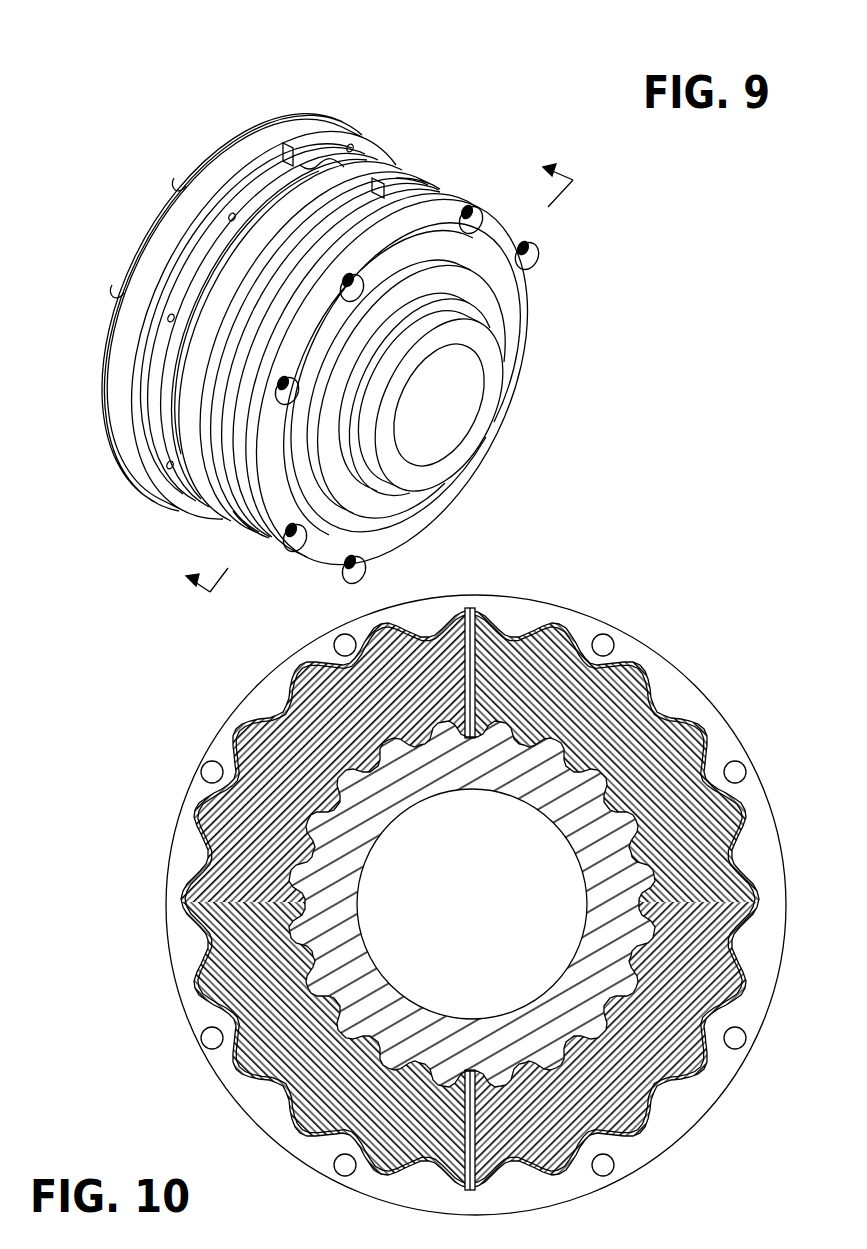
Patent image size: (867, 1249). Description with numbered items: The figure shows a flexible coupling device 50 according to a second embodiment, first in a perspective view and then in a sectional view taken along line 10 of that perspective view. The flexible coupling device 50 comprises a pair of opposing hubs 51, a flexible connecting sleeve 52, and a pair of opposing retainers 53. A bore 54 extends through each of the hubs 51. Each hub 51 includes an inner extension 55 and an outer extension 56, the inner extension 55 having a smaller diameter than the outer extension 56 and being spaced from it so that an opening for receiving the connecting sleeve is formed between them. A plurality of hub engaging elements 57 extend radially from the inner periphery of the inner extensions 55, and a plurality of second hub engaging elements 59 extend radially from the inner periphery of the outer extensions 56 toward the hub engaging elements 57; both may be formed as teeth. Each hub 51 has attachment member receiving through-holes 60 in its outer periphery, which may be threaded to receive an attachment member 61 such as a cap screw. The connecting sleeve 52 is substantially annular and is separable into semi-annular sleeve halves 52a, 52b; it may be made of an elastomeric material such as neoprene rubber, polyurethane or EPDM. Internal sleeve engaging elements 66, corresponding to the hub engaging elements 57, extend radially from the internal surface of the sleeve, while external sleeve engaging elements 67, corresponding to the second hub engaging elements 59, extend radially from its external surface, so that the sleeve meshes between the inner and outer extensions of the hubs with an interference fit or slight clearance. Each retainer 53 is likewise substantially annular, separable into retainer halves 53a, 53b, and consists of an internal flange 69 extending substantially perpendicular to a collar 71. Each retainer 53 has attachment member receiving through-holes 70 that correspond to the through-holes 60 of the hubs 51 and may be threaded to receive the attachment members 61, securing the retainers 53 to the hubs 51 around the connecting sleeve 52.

In FIG. 9, the flexible coupling device 50 is at (160, 91).
In FIG. 9, the hub 51 is at (140, 222).
In FIG. 9, the connecting sleeve 52 is at (317, 290).
In FIG. 9, the sleeve half 52a is at (378, 168).
In FIG. 10, the sleeve half 52a is at (300, 748).
In FIG. 9, the sleeve half 52b is at (405, 165).
In FIG. 10, the sleeve half 52b is at (610, 695).
In FIG. 9, the retainer 53 is at (349, 272).
In FIG. 9, the retainer half 53a is at (262, 160).
In FIG. 10, the retainer half 53a is at (190, 962).
In FIG. 9, the retainer half 53b is at (292, 165).
In FIG. 10, the retainer half 53b is at (526, 640).
In FIG. 9, the bore 54 is at (468, 445).
In FIG. 10, the bore 54 is at (560, 790).
In FIG. 10, the inner extension 55 is at (300, 1082).
In FIG. 9, the outer extension 56 is at (113, 367).
In FIG. 10, the outer extension 56 is at (420, 1192).
In FIG. 10, the hub engaging element 57 is at (670, 1085).
In FIG. 10, the second hub engaging element 59 is at (652, 858).
In FIG. 10, the attachment member receiving through-hole 60 is at (334, 645).
In FIG. 9, the attachment member 61 is at (175, 186).
In FIG. 10, the internal sleeve engaging element 66 is at (258, 858).
In FIG. 10, the external sleeve engaging element 67 is at (168, 905).
In FIG. 9, the internal flange 69 is at (296, 140).
In FIG. 9, the attachment member receiving through-hole 70 is at (230, 215).
In FIG. 9, the collar 71 is at (135, 445).
In FIG. 9, the section line 10 is at (397, 394).